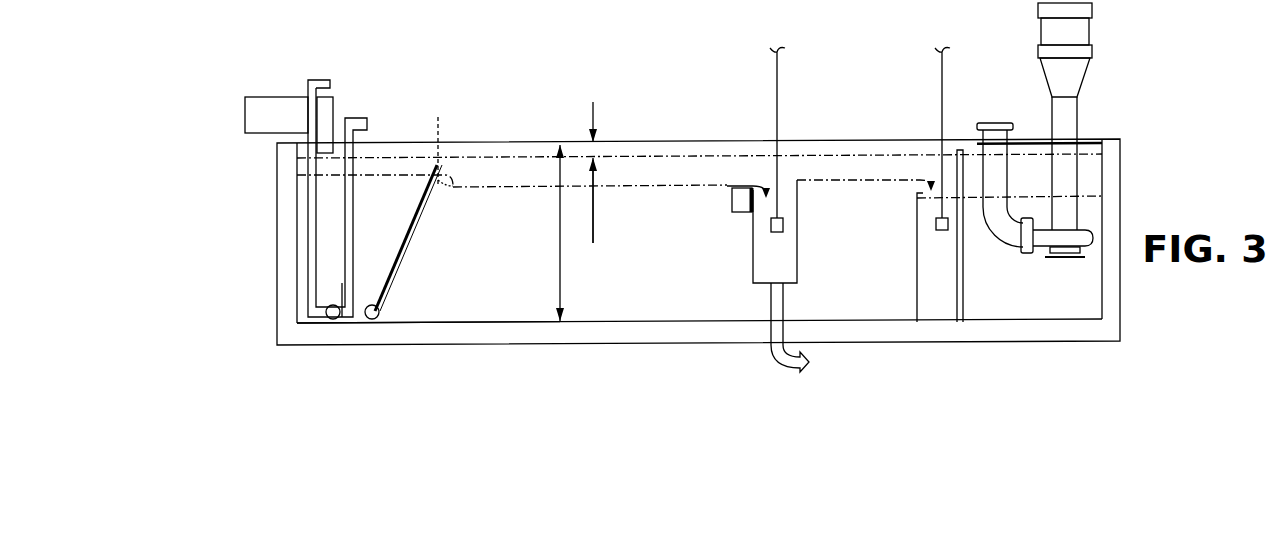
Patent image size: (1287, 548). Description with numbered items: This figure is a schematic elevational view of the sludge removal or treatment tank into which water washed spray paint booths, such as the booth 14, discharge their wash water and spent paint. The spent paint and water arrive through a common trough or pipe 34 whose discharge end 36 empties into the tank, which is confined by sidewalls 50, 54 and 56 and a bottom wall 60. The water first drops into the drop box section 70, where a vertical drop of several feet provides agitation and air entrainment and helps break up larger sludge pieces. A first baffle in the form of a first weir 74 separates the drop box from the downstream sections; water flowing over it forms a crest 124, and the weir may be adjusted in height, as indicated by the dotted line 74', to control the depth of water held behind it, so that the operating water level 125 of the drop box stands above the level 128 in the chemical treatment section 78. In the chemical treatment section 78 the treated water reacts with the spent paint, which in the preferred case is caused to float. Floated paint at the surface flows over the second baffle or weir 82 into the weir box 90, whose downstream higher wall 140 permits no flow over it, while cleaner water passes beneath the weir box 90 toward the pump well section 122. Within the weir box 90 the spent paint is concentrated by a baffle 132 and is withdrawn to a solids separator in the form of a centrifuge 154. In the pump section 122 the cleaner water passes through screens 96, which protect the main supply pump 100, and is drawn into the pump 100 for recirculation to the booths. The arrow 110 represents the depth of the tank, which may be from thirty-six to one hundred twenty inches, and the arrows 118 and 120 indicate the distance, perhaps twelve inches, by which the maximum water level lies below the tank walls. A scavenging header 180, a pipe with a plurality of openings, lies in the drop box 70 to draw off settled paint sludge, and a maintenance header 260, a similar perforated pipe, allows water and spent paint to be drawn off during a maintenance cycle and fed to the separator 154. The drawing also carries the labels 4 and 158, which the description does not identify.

The water treatment system 4 is at (833, 121).
The water washed spray paint booth 14 is at (647, 156).
The common trough or pipe 34 is at (276, 97).
The discharge end 36 is at (325, 100).
The sidewall 50 is at (277, 252).
The sidewall 54 is at (1121, 185).
The sidewall 56 is at (688, 231).
The bottom wall 60 is at (643, 322).
The drop box section 70 is at (342, 317).
The first weir 74 is at (427, 185).
The adjusted first weir position 74' is at (464, 144).
The chemical treatment section 78 is at (486, 311).
The second weir 82 is at (753, 262).
The weir box 90 is at (791, 265).
The screens 96 is at (962, 153).
The main supply pump 100 is at (1060, 235).
The tank depth arrow 110 is at (556, 327).
The water level clearance arrow 118 is at (594, 103).
The water level clearance arrow 120 is at (594, 218).
The pump well section 122 is at (1043, 293).
The water crest 124 is at (506, 186).
The drop tank water level 125 is at (379, 175).
The chemical treatment section water level 128 is at (456, 184).
The baffle 132 is at (743, 213).
The downstream higher wall 140 is at (800, 230).
The centrifuge 154 is at (878, 290).
The baffle wall 158 is at (913, 196).
The scavenging header 180 is at (375, 316).
The maintenance header 260 is at (310, 298).